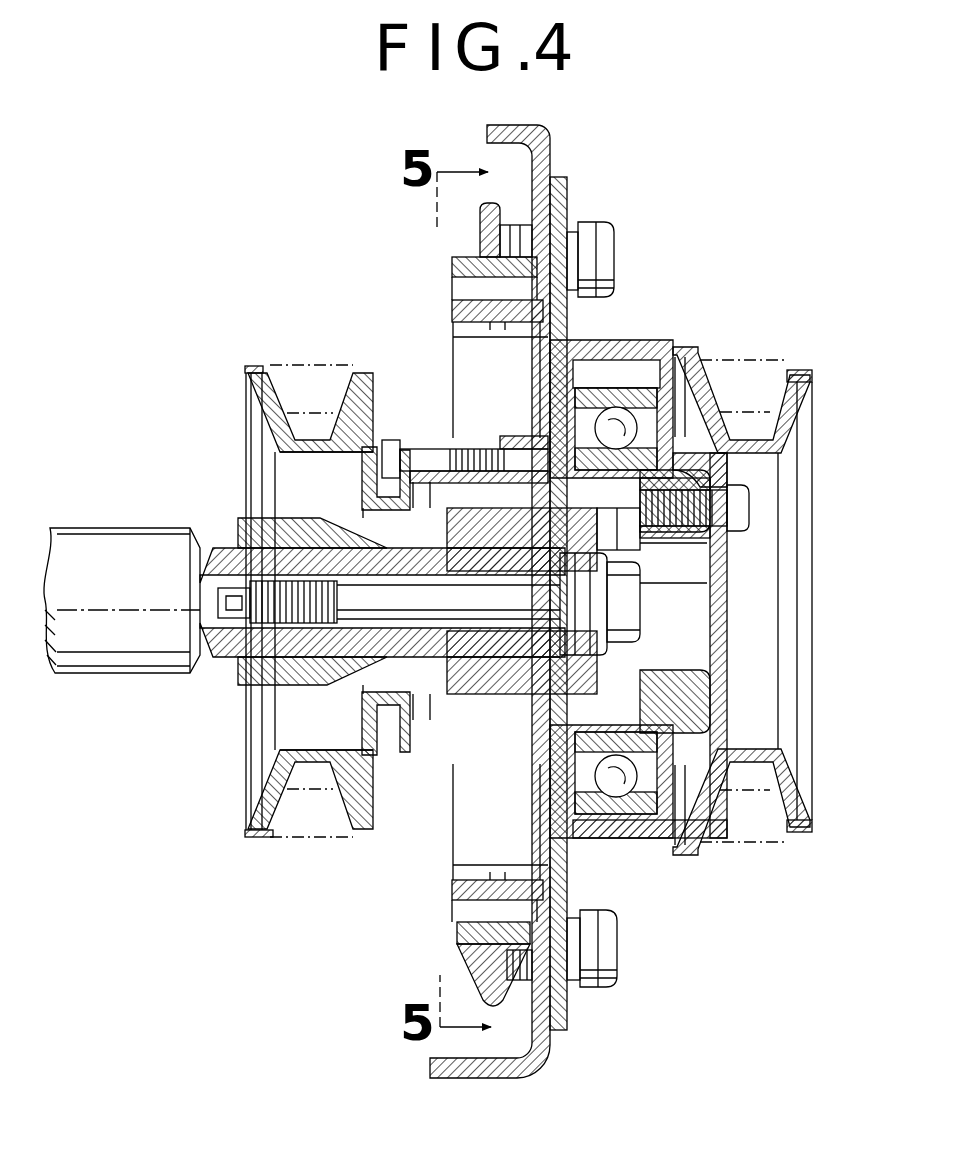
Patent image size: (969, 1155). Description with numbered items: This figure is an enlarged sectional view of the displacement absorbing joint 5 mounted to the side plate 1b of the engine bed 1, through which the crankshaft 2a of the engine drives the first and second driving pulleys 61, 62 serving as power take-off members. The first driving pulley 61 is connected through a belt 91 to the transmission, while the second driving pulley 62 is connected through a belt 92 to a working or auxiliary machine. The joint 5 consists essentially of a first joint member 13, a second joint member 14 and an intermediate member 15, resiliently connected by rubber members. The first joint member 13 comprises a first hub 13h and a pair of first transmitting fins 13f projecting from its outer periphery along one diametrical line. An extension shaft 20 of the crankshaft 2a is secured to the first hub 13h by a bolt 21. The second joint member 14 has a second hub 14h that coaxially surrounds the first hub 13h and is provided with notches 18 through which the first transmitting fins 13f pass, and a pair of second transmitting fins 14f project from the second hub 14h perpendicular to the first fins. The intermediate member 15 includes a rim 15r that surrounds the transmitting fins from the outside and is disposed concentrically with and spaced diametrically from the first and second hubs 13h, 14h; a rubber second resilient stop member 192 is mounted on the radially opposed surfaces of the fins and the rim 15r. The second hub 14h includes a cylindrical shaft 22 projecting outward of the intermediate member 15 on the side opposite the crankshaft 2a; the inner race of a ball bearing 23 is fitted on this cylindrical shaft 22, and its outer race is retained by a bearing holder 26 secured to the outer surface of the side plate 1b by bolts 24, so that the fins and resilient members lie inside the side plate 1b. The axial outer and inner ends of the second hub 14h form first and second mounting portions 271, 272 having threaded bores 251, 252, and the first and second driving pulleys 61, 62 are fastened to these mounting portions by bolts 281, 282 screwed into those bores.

The engine bed 1 is at (566, 174).
The side plate 1b is at (549, 128).
The crankshaft 2a is at (135, 630).
The displacement absorbing joint 5 is at (591, 851).
The first driving pulley 61 is at (802, 370).
The second driving pulley 62 is at (250, 366).
The belt 91 is at (762, 838).
The belt 92 is at (312, 838).
The first joint member 13 is at (383, 818).
The first transmitting fins 13f is at (449, 886).
The first hub 13h is at (477, 703).
The second joint member 14 is at (380, 278).
The second transmitting fins 14f is at (455, 308).
The second hub 14h is at (462, 412).
The intermediate member 15 is at (512, 1006).
The rim 15r is at (455, 938).
The notches 18 is at (562, 604).
The second resilient stop member 192 is at (497, 324).
The extension shaft 20 is at (303, 672).
The bolt 21 is at (642, 613).
The cylindrical shaft 22 is at (605, 484).
The ball bearing 23 is at (639, 372).
The bolts 24 is at (611, 258).
The threaded bore 251 is at (747, 504).
The threaded bore 252 is at (507, 445).
The bearing holder 26 is at (587, 341).
The first mounting portion 271 is at (724, 553).
The second mounting portion 272 is at (389, 601).
The bolt 281 is at (750, 512).
The bolt 282 is at (375, 470).